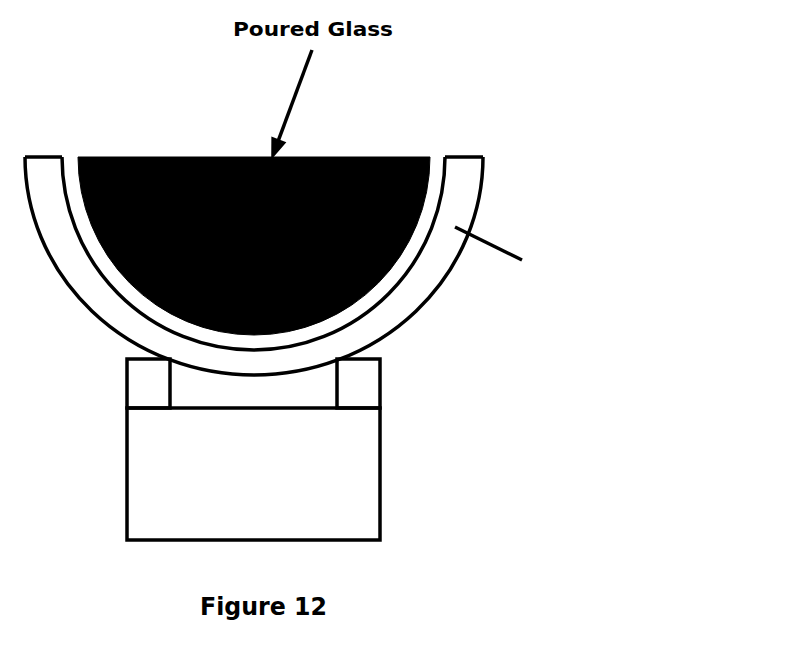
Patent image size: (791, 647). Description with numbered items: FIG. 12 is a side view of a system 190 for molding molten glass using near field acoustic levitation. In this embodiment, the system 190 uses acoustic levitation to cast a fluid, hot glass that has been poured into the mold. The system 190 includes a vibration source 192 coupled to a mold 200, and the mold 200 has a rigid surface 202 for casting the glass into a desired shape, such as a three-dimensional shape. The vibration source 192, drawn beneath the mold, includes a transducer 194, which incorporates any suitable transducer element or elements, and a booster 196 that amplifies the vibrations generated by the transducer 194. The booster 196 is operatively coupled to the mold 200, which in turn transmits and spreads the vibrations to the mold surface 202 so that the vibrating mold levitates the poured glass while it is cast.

The system 190 is at (366, 214).
The vibration source 192 is at (274, 449).
The transducer 194 is at (130, 517).
The booster 196 is at (130, 385).
The mold 200 is at (410, 300).
The rigid surface 202 is at (68, 165).